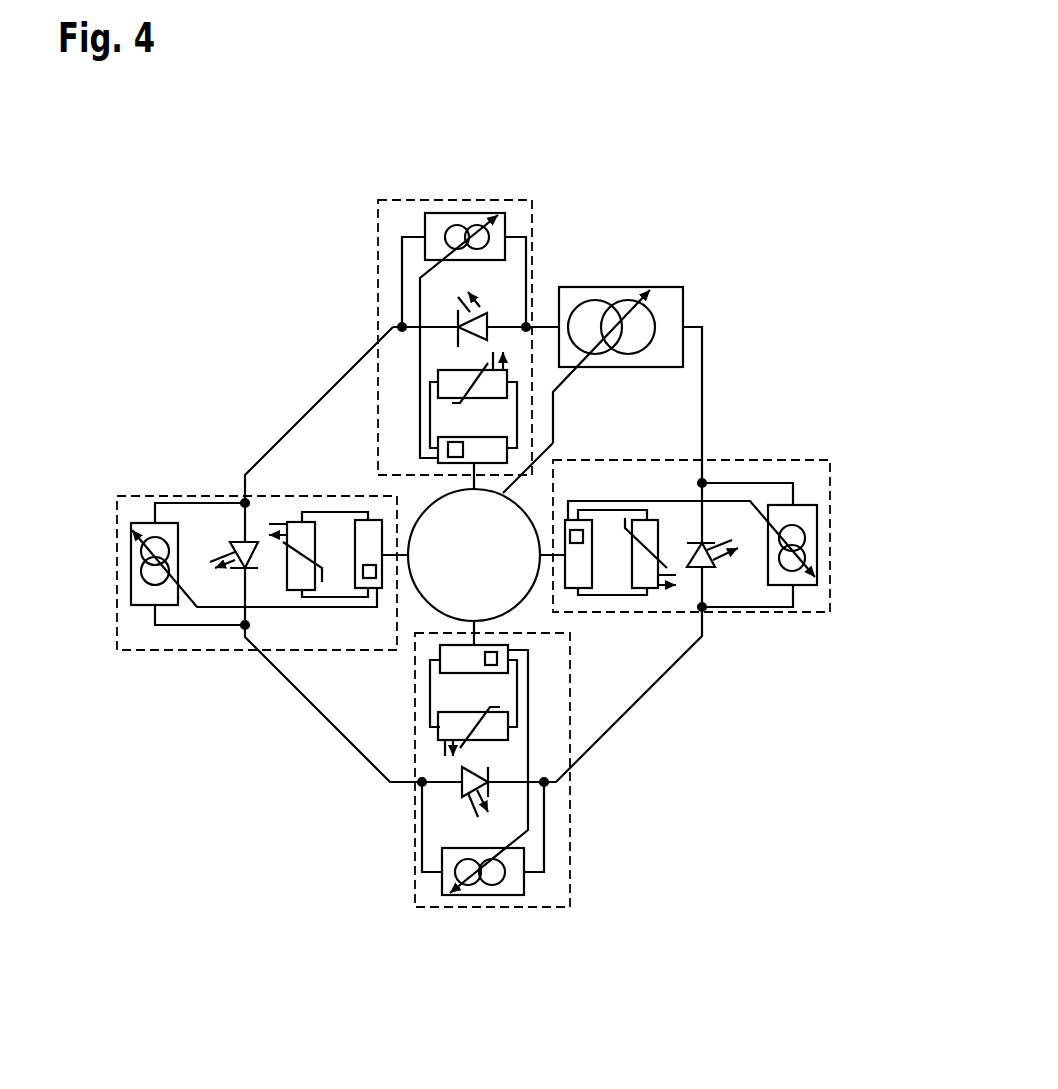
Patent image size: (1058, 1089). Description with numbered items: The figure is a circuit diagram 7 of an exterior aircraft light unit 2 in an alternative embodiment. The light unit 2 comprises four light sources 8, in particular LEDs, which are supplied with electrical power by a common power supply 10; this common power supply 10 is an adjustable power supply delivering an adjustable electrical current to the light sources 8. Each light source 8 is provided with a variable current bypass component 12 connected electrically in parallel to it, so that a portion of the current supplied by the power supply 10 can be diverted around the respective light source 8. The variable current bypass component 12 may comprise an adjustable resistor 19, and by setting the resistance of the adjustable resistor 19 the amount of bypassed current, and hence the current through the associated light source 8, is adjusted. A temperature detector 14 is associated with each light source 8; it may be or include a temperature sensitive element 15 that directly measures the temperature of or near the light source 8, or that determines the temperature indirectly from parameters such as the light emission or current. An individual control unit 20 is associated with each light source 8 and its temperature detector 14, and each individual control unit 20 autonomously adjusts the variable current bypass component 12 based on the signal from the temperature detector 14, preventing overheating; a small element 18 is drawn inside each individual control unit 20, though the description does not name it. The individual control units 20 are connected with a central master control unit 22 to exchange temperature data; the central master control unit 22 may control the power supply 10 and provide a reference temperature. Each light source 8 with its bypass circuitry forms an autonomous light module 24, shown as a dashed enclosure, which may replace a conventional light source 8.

The exterior aircraft light unit 2 is at (205, 180).
The circuit diagram 7 is at (710, 148).
The light source 8 is at (498, 318).
The common power supply 10 is at (648, 275).
The variable current bypass component 12 is at (462, 205).
The temperature detector 14 is at (522, 414).
The temperature sensitive element 15 is at (505, 378).
The memory 18 is at (455, 450).
The adjustable resistor 19 is at (433, 228).
The individual control unit 20 is at (507, 455).
The central master control unit 22 is at (420, 622).
The autonomous light module 24 is at (530, 190).